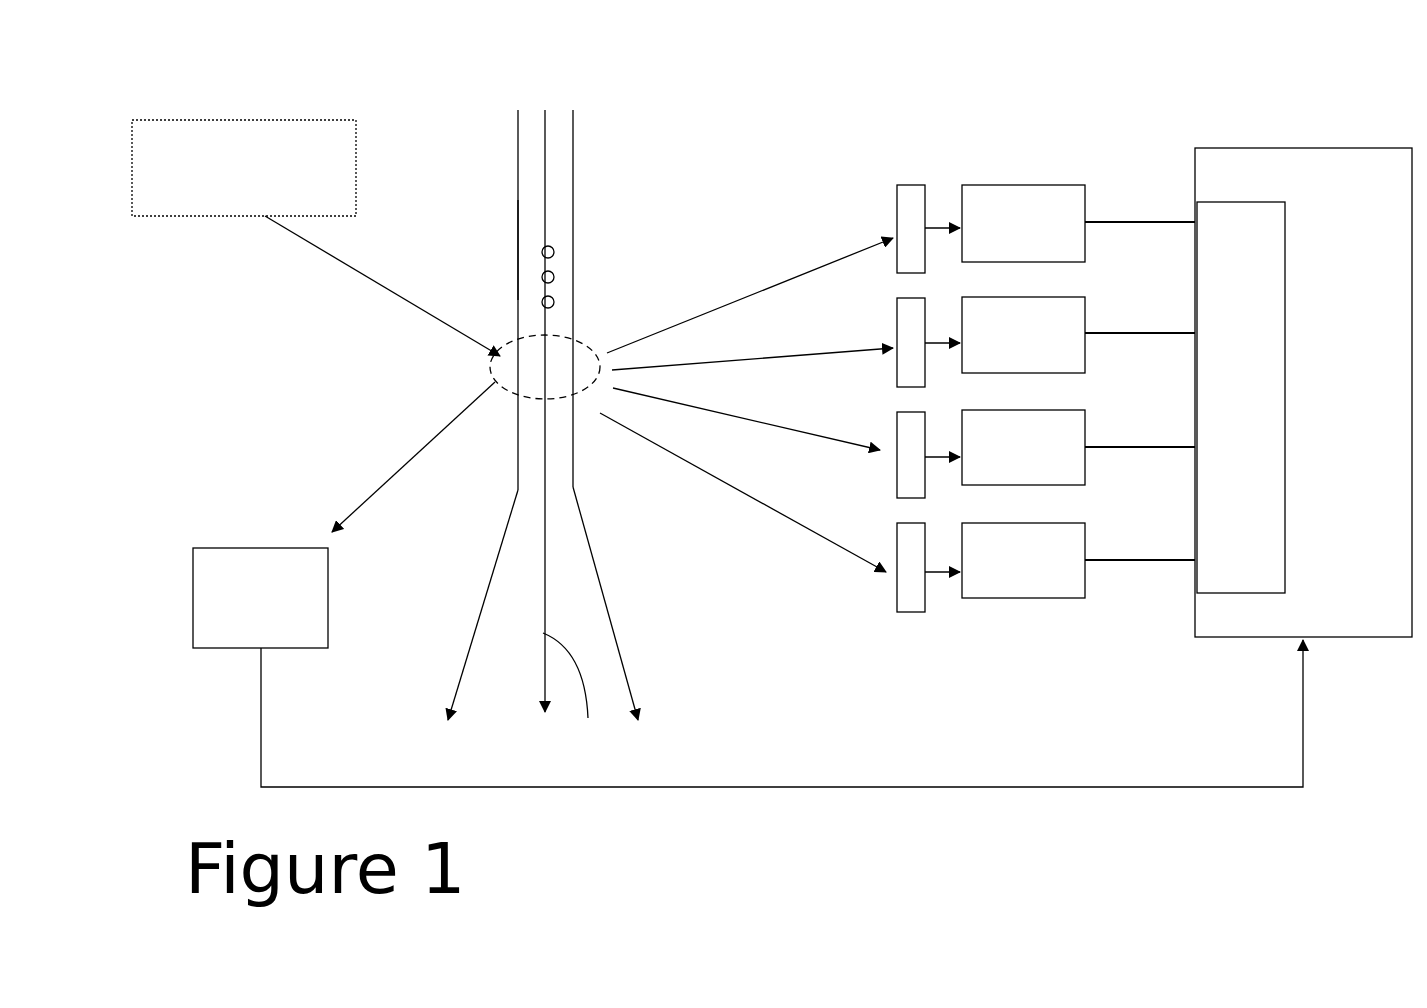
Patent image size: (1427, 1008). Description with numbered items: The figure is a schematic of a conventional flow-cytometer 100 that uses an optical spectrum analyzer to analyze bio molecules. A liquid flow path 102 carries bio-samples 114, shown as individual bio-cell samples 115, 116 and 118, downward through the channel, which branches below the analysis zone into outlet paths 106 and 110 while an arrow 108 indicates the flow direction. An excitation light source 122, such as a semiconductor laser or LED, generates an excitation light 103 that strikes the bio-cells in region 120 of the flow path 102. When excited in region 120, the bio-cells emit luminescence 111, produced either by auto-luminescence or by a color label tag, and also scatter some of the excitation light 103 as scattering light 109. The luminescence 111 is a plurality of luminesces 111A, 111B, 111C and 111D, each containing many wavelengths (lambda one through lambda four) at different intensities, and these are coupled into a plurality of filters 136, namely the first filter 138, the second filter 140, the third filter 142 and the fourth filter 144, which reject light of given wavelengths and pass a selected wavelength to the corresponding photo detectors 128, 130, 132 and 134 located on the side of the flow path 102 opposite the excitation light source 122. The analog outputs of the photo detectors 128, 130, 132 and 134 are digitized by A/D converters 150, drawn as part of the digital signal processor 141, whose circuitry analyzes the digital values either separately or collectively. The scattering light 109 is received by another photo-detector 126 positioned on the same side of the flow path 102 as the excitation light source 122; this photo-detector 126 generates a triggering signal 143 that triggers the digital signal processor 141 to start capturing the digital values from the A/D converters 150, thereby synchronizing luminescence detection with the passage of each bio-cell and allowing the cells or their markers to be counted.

The flow-cytometer 100 is at (1160, 71).
The flow path 102 is at (543, 266).
The excitation light 103 is at (322, 251).
The outlet channel 106 is at (452, 691).
The flow direction 108 is at (574, 430).
The scattering light 109 is at (388, 478).
The outlet channel 110 is at (621, 640).
The luminescence 111 is at (746, 372).
The luminescence 111A is at (750, 289).
The luminescence 111B is at (752, 345).
The luminescence 111C is at (746, 403).
The luminescence 111D is at (743, 492).
The bio-samples 114 is at (500, 251).
The bio-cell sample 115 is at (554, 248).
The bio-cell sample 116 is at (554, 274).
The bio-cell sample 118 is at (554, 300).
The region 120 is at (503, 343).
The excitation light source 122 is at (356, 120).
The photo-detector 126 is at (193, 548).
The photo detector 128 is at (1085, 185).
The photo detector 130 is at (1085, 297).
The photo detector 132 is at (1085, 410).
The photo detector 134 is at (1085, 523).
The filters 136 is at (871, 342).
The filter F1 138 is at (897, 186).
The filter F2 140 is at (897, 300).
The digital signal processor 141 is at (1303, 362).
The filter F3 142 is at (897, 496).
The triggering signal 143 is at (908, 787).
The filter F4 144 is at (897, 612).
The A/D converters 150 is at (1285, 202).